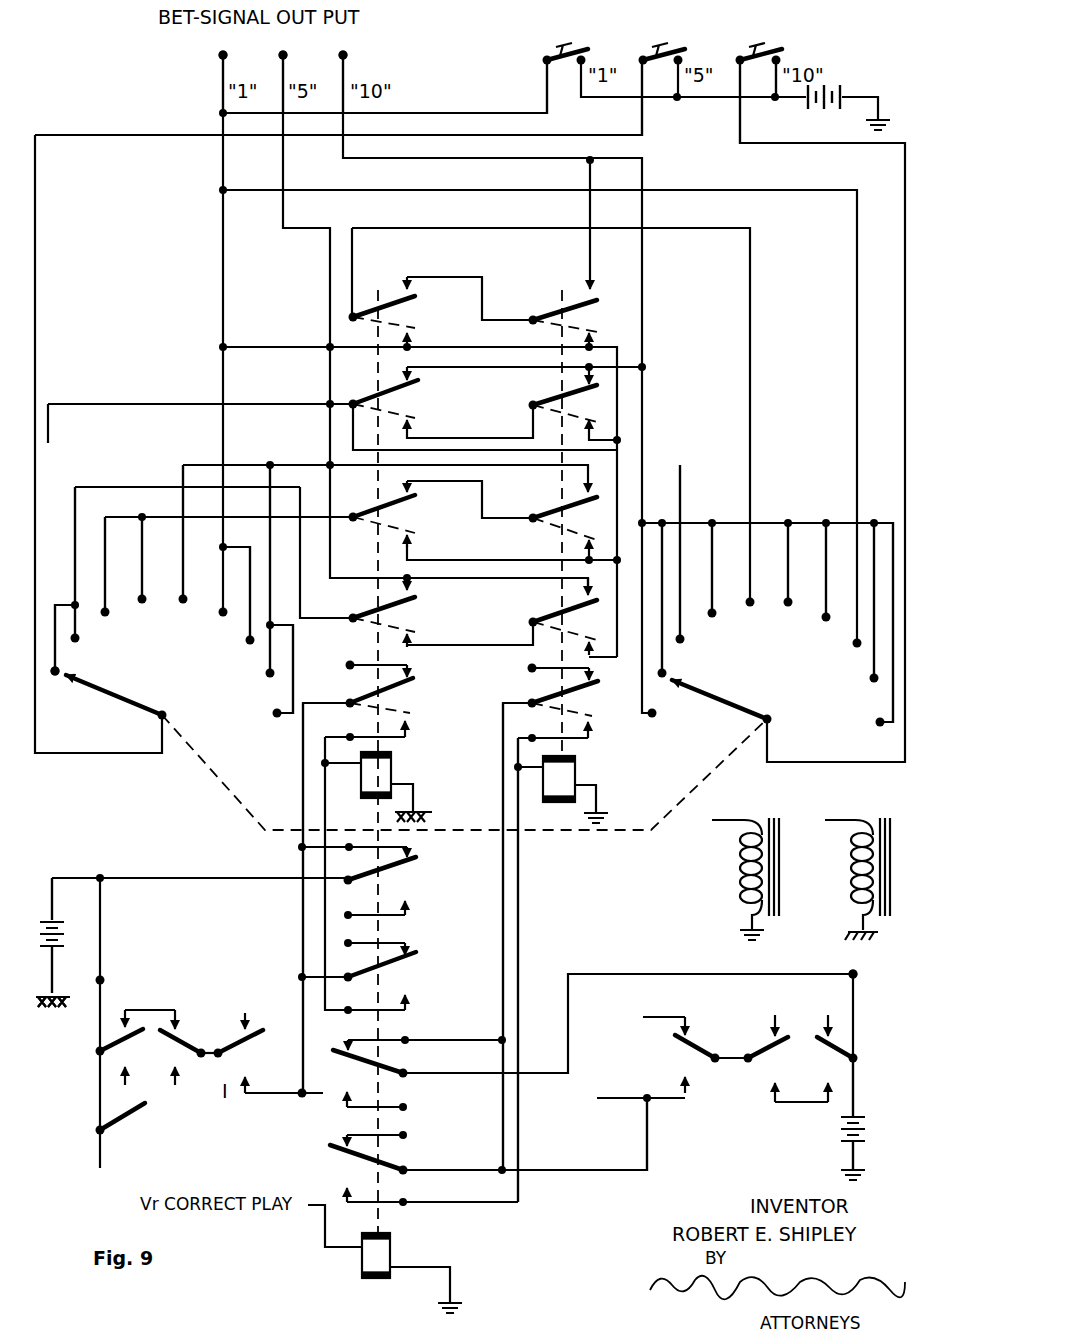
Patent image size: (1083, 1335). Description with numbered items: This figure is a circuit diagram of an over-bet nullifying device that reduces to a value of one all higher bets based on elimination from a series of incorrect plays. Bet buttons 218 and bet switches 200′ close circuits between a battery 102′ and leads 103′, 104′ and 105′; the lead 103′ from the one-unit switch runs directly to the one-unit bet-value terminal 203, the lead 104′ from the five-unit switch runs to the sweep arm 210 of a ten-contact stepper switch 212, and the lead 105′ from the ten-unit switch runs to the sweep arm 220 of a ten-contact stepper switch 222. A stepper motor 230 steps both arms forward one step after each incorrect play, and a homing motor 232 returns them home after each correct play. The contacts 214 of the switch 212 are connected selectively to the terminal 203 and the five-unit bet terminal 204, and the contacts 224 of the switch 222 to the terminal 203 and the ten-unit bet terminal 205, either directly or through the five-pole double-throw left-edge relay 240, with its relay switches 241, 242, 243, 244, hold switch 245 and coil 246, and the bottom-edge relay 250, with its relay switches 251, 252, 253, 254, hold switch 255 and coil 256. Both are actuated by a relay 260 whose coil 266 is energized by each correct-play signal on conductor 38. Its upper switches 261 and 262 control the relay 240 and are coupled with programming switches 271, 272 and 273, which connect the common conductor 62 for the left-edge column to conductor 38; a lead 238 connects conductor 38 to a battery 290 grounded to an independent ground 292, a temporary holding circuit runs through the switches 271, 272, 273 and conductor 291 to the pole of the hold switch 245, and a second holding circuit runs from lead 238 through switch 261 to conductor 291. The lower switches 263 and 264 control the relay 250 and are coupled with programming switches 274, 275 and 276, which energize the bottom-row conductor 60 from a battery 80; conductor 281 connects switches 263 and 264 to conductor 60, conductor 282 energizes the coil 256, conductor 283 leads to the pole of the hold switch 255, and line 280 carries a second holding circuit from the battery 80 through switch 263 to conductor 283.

The 1-unit bet-value terminal 203 is at (220, 53).
The 5-unit bet terminal 204 is at (282, 53).
The 10-unit bet terminal 205 is at (342, 53).
The bet buttons 218 is at (560, 51).
The bet switches 200′ is at (785, 57).
The battery 102′ is at (843, 96).
The lead 103′ is at (546, 108).
The lead 104′ is at (640, 130).
The lead 105′ is at (740, 115).
The left-edge relay 240 is at (406, 516).
The bottom-edge relay 250 is at (564, 518).
The relay switch 241 is at (405, 315).
The relay switch 242 is at (405, 405).
The relay switch 243 is at (405, 513).
The relay switch 244 is at (405, 617).
The hold switch 245 is at (405, 702).
The coil 246 is at (380, 769).
The relay switch 251 is at (582, 317).
The relay switch 252 is at (560, 400).
The relay switch 253 is at (558, 503).
The relay switch 254 is at (560, 613).
The hold switch 255 is at (580, 700).
The coil 256 is at (560, 771).
The sweep arm 210 is at (125, 706).
The 10-contact stepper switch 212 is at (216, 704).
The contacts 214 is at (40, 716).
The sweep arm 220 is at (728, 704).
The 10-contact stepper switch 222 is at (816, 723).
The contacts 224 is at (660, 714).
The homing motor 232 is at (745, 873).
The stepper motor 230 is at (852, 873).
The relay 260 is at (386, 1067).
The switch 261 is at (397, 870).
The switch 262 is at (400, 963).
The switch 263 is at (394, 1082).
The switch 264 is at (345, 1168).
The coil 266 is at (380, 1253).
The conductor 283 is at (503, 965).
The conductor 282 is at (518, 920).
The conductor 281 is at (625, 1172).
The line 280 is at (853, 974).
The battery 290 is at (62, 932).
The independent ground 292 is at (58, 1012).
The lead 238 is at (103, 980).
The programming switch 271 is at (110, 1038).
The programming switch 272 is at (184, 1038).
The programming switch 273 is at (243, 1058).
The conductor 291 is at (303, 1020).
The common conductor 62 is at (316, 1098).
The conductor 38 is at (97, 1115).
The programming switch 274 is at (681, 1063).
The programming switch 275 is at (768, 1077).
The programming switch 276 is at (815, 1053).
The conductor 60 is at (618, 1100).
The battery 80 is at (852, 1140).